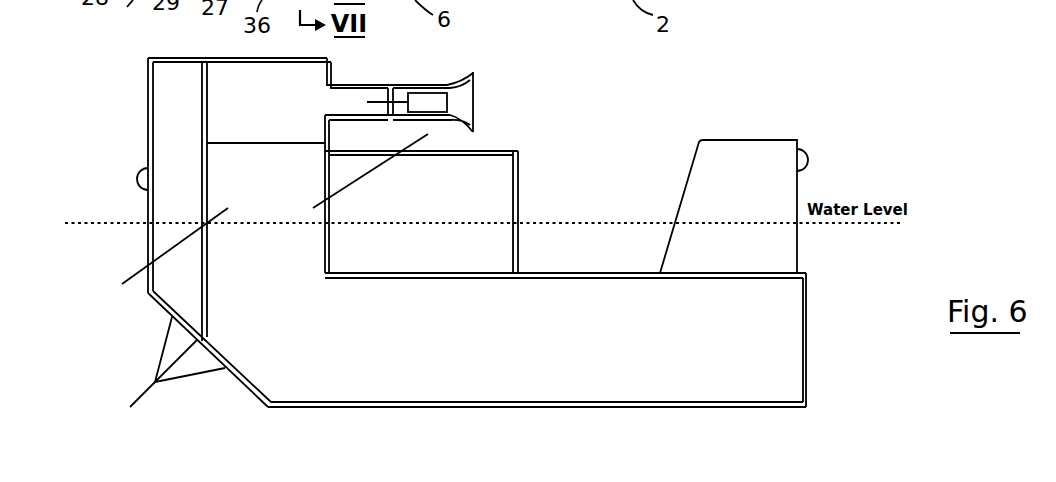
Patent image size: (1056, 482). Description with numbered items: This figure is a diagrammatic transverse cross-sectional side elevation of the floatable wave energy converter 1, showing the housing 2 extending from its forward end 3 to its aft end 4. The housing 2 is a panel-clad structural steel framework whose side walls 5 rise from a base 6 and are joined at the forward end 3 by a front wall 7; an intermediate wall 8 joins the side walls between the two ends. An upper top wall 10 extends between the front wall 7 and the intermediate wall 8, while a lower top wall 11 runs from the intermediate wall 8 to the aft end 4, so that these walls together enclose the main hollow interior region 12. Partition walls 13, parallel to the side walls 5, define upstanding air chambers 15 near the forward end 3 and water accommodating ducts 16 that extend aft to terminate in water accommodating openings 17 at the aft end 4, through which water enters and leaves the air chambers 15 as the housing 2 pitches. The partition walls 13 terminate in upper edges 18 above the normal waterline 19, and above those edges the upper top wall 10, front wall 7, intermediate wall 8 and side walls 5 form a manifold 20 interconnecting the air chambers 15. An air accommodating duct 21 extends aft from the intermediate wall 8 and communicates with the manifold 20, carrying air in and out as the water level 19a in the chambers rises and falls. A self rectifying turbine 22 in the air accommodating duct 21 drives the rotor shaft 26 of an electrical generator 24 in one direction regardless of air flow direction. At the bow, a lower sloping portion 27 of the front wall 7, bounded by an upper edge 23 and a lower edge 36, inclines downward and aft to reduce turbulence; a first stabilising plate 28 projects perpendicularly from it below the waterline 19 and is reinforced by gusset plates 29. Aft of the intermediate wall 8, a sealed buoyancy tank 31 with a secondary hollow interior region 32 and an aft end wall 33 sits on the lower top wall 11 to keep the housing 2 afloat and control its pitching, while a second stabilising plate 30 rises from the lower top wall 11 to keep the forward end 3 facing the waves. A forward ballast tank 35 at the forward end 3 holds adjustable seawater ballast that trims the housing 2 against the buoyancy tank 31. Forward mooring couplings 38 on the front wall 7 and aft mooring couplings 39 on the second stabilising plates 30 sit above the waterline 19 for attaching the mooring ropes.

The wave energy converter 1 is at (690, 87).
The housing 2 is at (625, 405).
The forward end 3 is at (148, 242).
The aft end 4 is at (806, 362).
The side walls 5 is at (500, 0).
The base 6 is at (415, 408).
The front wall 7 is at (148, 107).
The intermediate wall 8 is at (330, 134).
The upper top wall 10 is at (247, 58).
The lower top wall 11 is at (572, 273).
The main hollow interior region 12 is at (384, 167).
The partition walls 13 is at (247, 157).
The air chambers 15 is at (159, 255).
The water accommodating ducts 16 is at (503, 387).
The water accommodating openings 17 is at (806, 325).
The upper edges 18 is at (238, 143).
The waterline 19 is at (105, 226).
The water level 19a is at (238, 225).
The manifold 20 is at (262, 90).
The air accommodating duct 21 is at (350, 82).
The self rectifying turbine 22 is at (399, 93).
The upper edge 23 is at (152, 293).
The electrical generator 24 is at (428, 103).
The rotor shaft 26 is at (412, 85).
The lower sloping portion 27 is at (250, 390).
The first stabilising plate 28 is at (140, 393).
The gusset plates 29 is at (173, 343).
The second stabilising plates 30 is at (747, 153).
The buoyancy tank 31 is at (490, 172).
The secondary hollow interior region 32 is at (495, 203).
The aft end wall 33 is at (518, 168).
The forward ballast tank 35 is at (178, 80).
The lower edge 36 is at (265, 410).
The forward mooring couplings 38 is at (138, 165).
The aft mooring couplings 39 is at (808, 162).